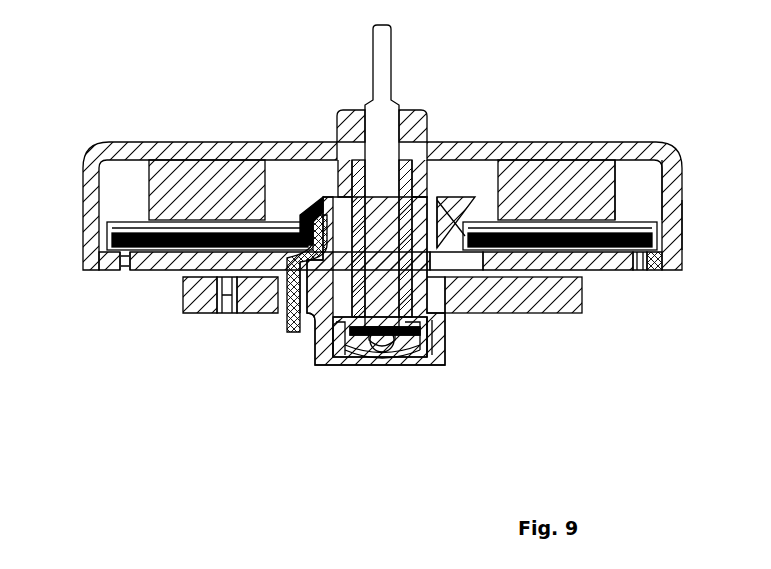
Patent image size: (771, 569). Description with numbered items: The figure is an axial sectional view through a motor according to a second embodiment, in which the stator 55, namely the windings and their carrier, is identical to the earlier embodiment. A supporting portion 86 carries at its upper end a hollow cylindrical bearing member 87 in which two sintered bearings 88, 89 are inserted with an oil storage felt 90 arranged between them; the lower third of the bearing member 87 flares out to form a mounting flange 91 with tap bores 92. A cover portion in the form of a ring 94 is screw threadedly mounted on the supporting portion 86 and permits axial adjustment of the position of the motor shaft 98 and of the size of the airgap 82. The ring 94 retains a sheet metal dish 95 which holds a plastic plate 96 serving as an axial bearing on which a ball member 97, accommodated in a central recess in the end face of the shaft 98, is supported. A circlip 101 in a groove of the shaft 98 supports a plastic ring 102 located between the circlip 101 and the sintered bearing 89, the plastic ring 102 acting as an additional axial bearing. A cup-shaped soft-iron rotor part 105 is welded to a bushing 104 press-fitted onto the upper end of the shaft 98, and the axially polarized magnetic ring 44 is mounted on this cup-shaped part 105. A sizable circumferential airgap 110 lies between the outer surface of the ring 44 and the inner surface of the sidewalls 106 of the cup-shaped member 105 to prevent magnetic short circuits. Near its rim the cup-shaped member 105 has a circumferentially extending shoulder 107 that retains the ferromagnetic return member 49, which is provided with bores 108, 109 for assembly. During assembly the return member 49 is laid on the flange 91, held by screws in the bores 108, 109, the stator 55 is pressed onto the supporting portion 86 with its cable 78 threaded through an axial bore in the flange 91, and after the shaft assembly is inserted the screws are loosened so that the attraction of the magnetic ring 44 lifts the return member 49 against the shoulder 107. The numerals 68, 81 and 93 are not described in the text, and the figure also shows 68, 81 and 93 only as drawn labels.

The magnetic ring 44 is at (195, 185).
The ferromagnetic return member 49 is at (160, 260).
The stator 55 is at (487, 220).
The coil 68 is at (107, 232).
The cable 78 is at (288, 332).
The housing flange 81 is at (518, 313).
The airgap 82 is at (620, 255).
The supporting portion 86 is at (308, 350).
The hollow cylindrical bearing member 87 is at (340, 185).
The sintered bearing 88 is at (437, 153).
The sintered bearing 89 is at (335, 365).
The oil storage felt 90 is at (420, 192).
The mounting flange 91 is at (558, 300).
The tap bores 92 is at (222, 313).
The bearing cup 93 is at (440, 375).
The cover portion ring 94 is at (345, 366).
The sheet metal dish 95 is at (432, 366).
The plastic plate 96 is at (410, 357).
The ball member 97 is at (382, 352).
The motor shaft 98 is at (391, 240).
The circlip 101 is at (428, 350).
The plastic ring 102 is at (430, 330).
The bushing 104 is at (417, 124).
The cup-shaped soft-iron rotor part 105 is at (563, 152).
The sidewalls 106 is at (683, 210).
The circumferentially extending shoulder 107 is at (672, 262).
The bore 108 is at (122, 270).
The bore 109 is at (655, 270).
The circumferential airgap 110 is at (638, 187).